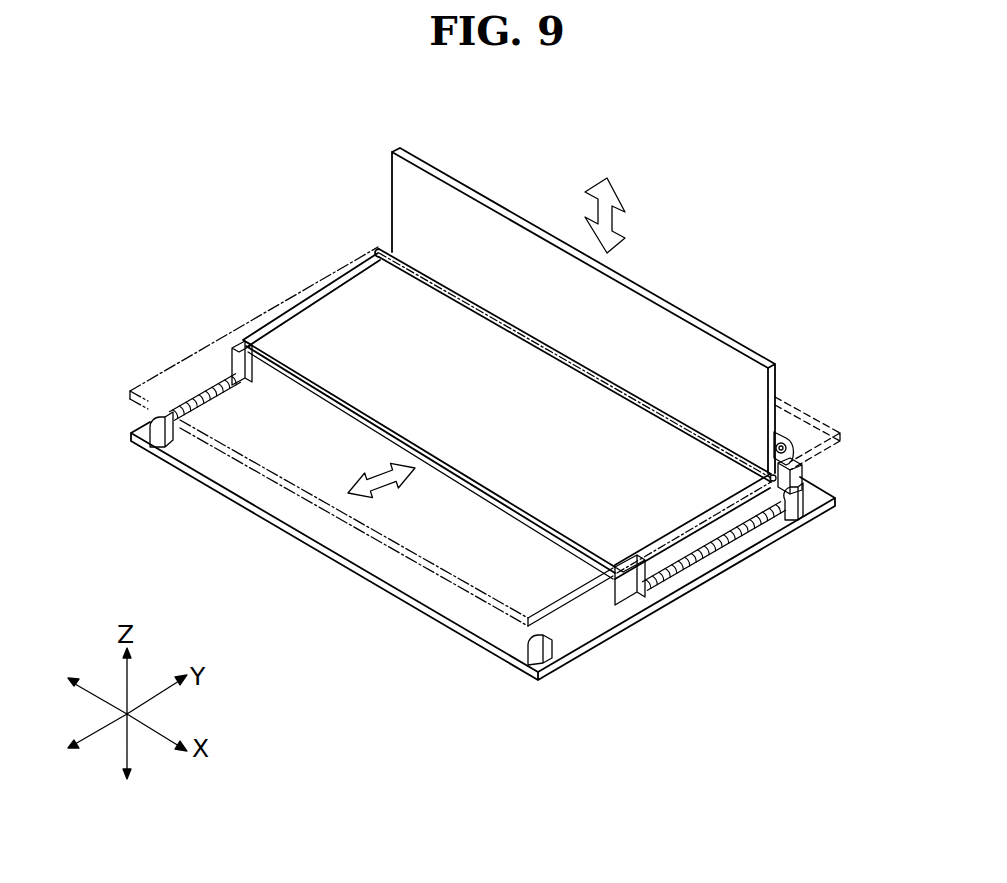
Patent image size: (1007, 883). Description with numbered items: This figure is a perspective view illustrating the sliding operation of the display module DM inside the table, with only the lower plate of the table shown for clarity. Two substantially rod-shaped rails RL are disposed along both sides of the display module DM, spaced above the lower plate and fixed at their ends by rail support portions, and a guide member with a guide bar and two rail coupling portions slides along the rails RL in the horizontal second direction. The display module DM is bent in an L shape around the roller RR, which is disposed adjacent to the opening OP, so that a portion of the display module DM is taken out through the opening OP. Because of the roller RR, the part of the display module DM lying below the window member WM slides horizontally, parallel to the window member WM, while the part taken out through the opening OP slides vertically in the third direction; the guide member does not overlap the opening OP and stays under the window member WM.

The display module DM is at (478, 222).
The roller RR is at (384, 246).
The window member WM is at (268, 307).
The opening OP is at (813, 430).
The rail RL is at (208, 392).